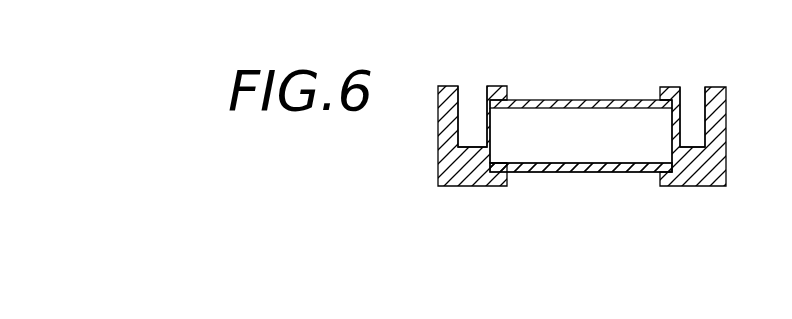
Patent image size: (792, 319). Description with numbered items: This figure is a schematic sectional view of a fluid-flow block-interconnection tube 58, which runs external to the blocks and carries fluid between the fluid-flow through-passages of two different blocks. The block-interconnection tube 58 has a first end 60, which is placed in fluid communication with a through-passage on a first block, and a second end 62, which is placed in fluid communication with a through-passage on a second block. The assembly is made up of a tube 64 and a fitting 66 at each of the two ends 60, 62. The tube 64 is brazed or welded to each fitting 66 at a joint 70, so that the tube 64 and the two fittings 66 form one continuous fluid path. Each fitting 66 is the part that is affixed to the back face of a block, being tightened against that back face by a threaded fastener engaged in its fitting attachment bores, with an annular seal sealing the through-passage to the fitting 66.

The fluid-flow block-interconnection tube 58 is at (585, 94).
The first end 60 is at (472, 87).
The second end 62 is at (699, 86).
The tube 64 is at (598, 173).
The fitting 66 is at (478, 174).
The joint 70 is at (649, 86).